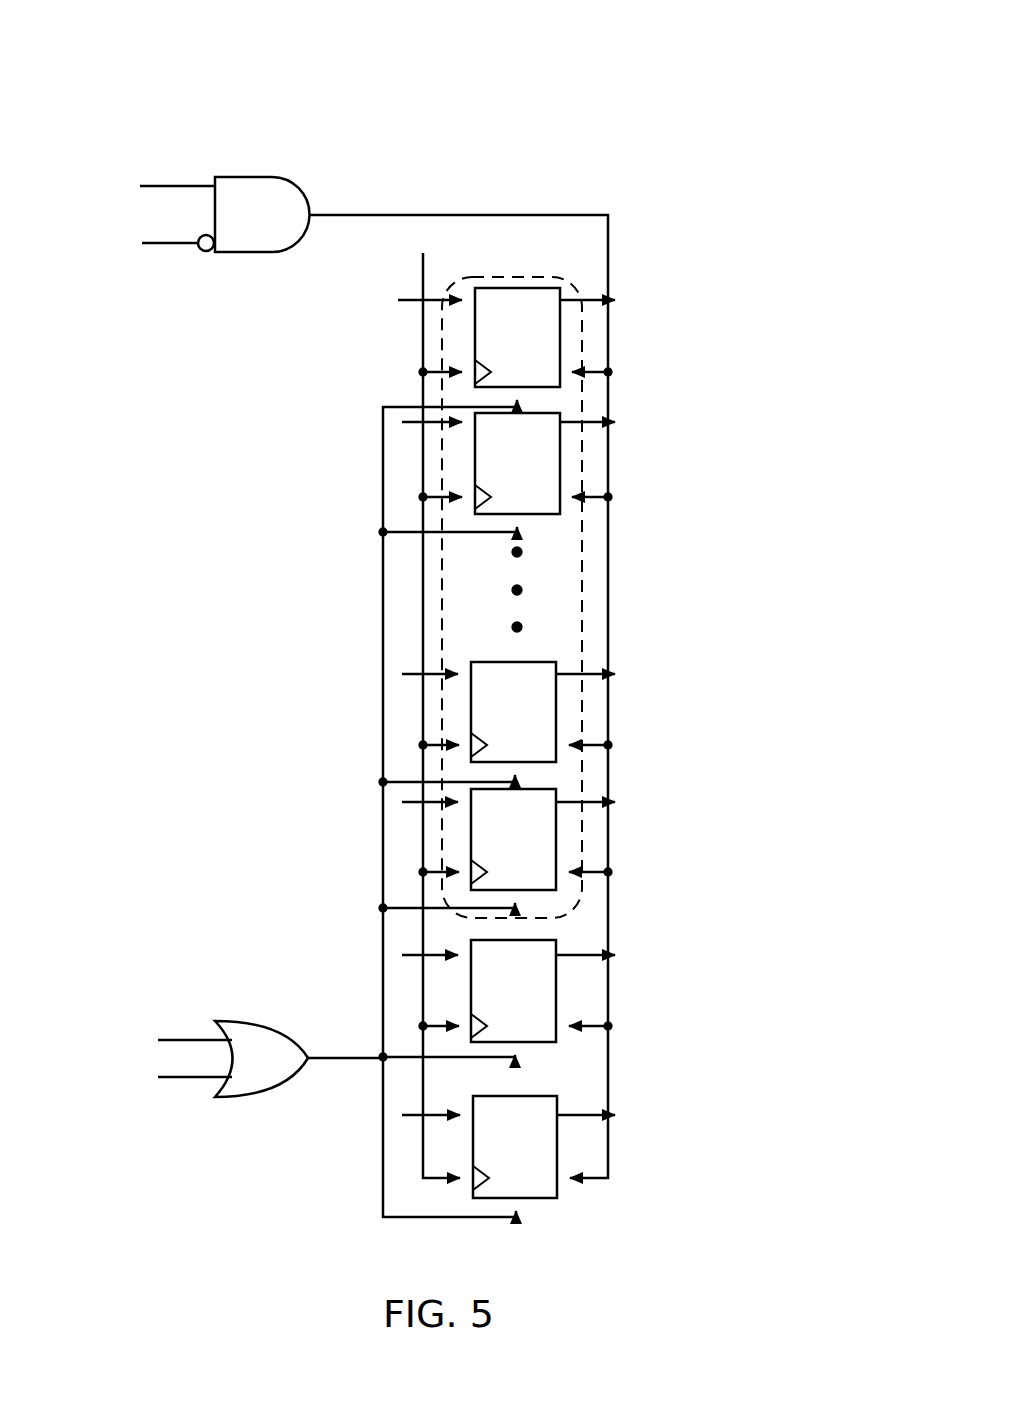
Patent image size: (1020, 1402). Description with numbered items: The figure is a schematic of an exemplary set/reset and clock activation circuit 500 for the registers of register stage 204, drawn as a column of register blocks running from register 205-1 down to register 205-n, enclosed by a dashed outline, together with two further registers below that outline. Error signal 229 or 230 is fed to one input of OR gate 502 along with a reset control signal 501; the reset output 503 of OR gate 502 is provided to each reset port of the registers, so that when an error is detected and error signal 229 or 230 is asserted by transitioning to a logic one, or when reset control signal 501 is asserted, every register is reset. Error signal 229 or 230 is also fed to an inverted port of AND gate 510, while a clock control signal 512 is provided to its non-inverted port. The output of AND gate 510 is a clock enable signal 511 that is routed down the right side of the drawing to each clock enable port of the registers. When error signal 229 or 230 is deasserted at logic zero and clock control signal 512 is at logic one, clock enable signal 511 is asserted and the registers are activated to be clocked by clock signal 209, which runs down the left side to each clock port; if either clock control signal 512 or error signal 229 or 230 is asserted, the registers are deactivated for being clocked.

The set/reset and clock activation circuit 500 is at (648, 103).
The clock control signal 512 is at (152, 186).
The AND gate 510 is at (310, 193).
The error signal 229 is at (180, 245).
The error signal 230 is at (633, 1113).
The clock enable signal 511 is at (609, 260).
The clock signal 209 is at (420, 260).
The register stage 204 is at (480, 277).
The register 205-1 is at (506, 337).
The register 205-n is at (508, 839).
The OR gate 502 is at (253, 1022).
The reset output 503 is at (360, 1057).
The reset control signal 501 is at (145, 1109).